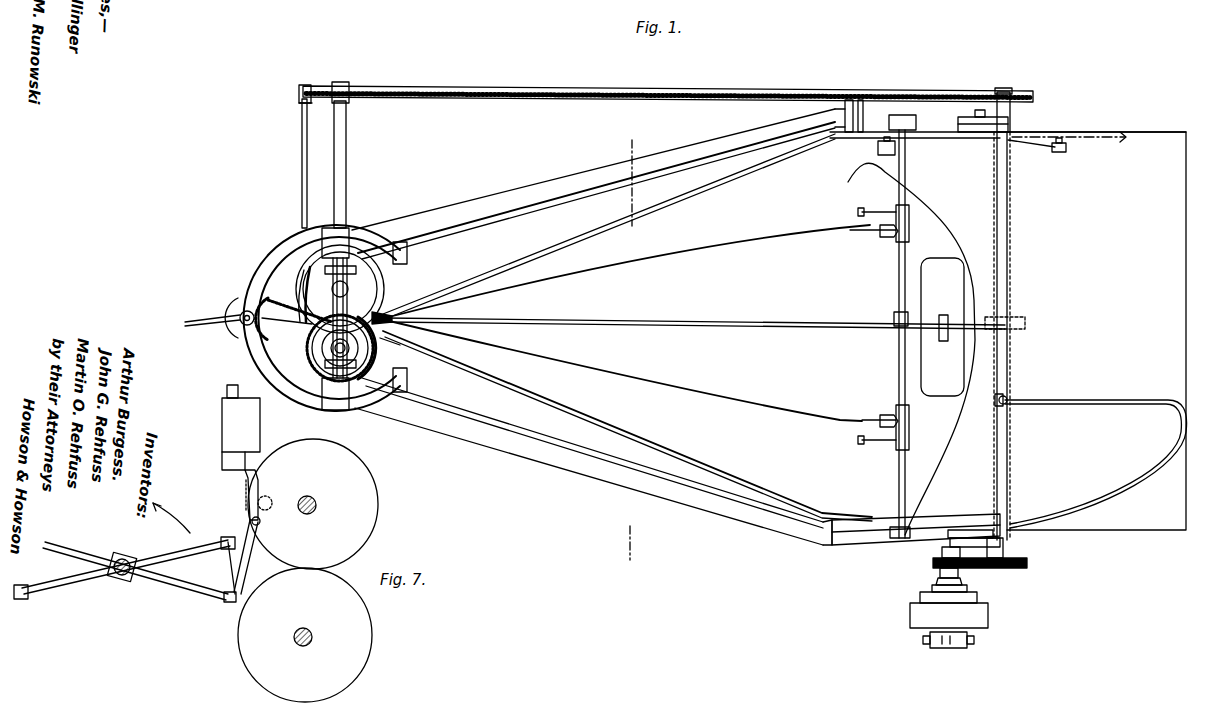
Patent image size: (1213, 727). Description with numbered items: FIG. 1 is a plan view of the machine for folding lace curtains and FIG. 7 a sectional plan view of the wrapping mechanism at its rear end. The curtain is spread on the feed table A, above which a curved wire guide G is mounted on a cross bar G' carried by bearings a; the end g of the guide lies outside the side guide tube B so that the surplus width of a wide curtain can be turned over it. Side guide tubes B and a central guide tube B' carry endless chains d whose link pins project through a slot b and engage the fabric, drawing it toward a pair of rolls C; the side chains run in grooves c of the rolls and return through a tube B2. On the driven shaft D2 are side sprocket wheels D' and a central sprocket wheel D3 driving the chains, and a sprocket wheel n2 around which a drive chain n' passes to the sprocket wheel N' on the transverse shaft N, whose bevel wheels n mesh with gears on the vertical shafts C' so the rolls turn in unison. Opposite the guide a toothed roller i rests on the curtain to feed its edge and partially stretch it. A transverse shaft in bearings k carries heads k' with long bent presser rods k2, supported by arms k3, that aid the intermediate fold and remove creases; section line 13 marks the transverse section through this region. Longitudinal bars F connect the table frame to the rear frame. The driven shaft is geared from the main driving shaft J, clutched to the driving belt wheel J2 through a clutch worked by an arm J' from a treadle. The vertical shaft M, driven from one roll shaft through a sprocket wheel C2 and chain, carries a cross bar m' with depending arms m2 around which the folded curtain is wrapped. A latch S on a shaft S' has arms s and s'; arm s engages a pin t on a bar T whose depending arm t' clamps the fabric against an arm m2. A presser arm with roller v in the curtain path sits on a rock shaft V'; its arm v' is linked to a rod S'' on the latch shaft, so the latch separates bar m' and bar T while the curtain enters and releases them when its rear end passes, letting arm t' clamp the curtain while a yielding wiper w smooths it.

In FIG. 1, the drive chain n' is at (666, 85).
In FIG. 1, the sprocket wheel N' is at (353, 82).
In FIG. 1, the transverse shaft N is at (349, 164).
In FIG. 1, the latch shaft S' is at (325, 255).
In FIG. 1, the feeding drum (roll) C is at (350, 313).
In FIG. 7, the feeding drum (roll) C is at (314, 570).
In FIG. 1, the vertical shaft C' is at (292, 291).
In FIG. 7, the vertical shaft C' is at (317, 571).
In FIG. 1, the bevel wheel n is at (346, 318).
In FIG. 1, the vertical shaft M is at (234, 313).
In FIG. 1, the sprocket wheel C2 is at (236, 338).
In FIG. 1, the latch S is at (297, 295).
In FIG. 1, the groove c is at (416, 345).
In FIG. 1, the longitudinal bar F is at (618, 165).
In FIG. 1, the section line 13 is at (632, 349).
In FIG. 1, the side guide tube B is at (627, 327).
In FIG. 1, the return tube B2 is at (658, 184).
In FIG. 1, the central guide tube B' is at (695, 314).
In FIG. 1, the presser rod k2 is at (390, 313).
In FIG. 1, the rock shaft V' is at (849, 99).
In FIG. 1, the bearing k is at (897, 322).
In FIG. 1, the sprocket wheel n2 is at (1018, 96).
In FIG. 1, the bearing a is at (975, 121).
In FIG. 1, the side sprocket wheel D' is at (1021, 323).
In FIG. 1, the slot b is at (1008, 146).
In FIG. 1, the toothed roller i is at (1067, 149).
In FIG. 1, the arm v' is at (868, 152).
In FIG. 1, the roller v is at (911, 349).
In FIG. 1, the supporting arm k3 is at (872, 212).
In FIG. 1, the head k' is at (874, 326).
In FIG. 1, the central sprocket wheel D3 is at (1014, 318).
In FIG. 1, the feed table A is at (1096, 331).
In FIG. 1, the cross bar G' is at (1013, 387).
In FIG. 1, the curved guide G is at (1096, 464).
In FIG. 1, the guide end g is at (1006, 532).
In FIG. 7, the guide end g is at (246, 486).
In FIG. 1, the endless chain d is at (946, 534).
In FIG. 1, the driven shaft D2 is at (1000, 568).
In FIG. 1, the main driving shaft J is at (928, 584).
In FIG. 1, the arm J' is at (964, 603).
In FIG. 1, the driving belt wheel J2 is at (949, 625).
In FIG. 7, the rod S'' is at (226, 427).
In FIG. 7, the latch arm s is at (265, 493).
In FIG. 7, the yielding wiper w is at (259, 523).
In FIG. 7, the latch arm s' is at (248, 557).
In FIG. 7, the bar T is at (135, 576).
In FIG. 7, the cross bar m' is at (126, 573).
In FIG. 7, the depending arm m2 is at (20, 599).
In FIG. 7, the clamp arm t' is at (239, 589).
In FIG. 7, the pin t is at (216, 586).